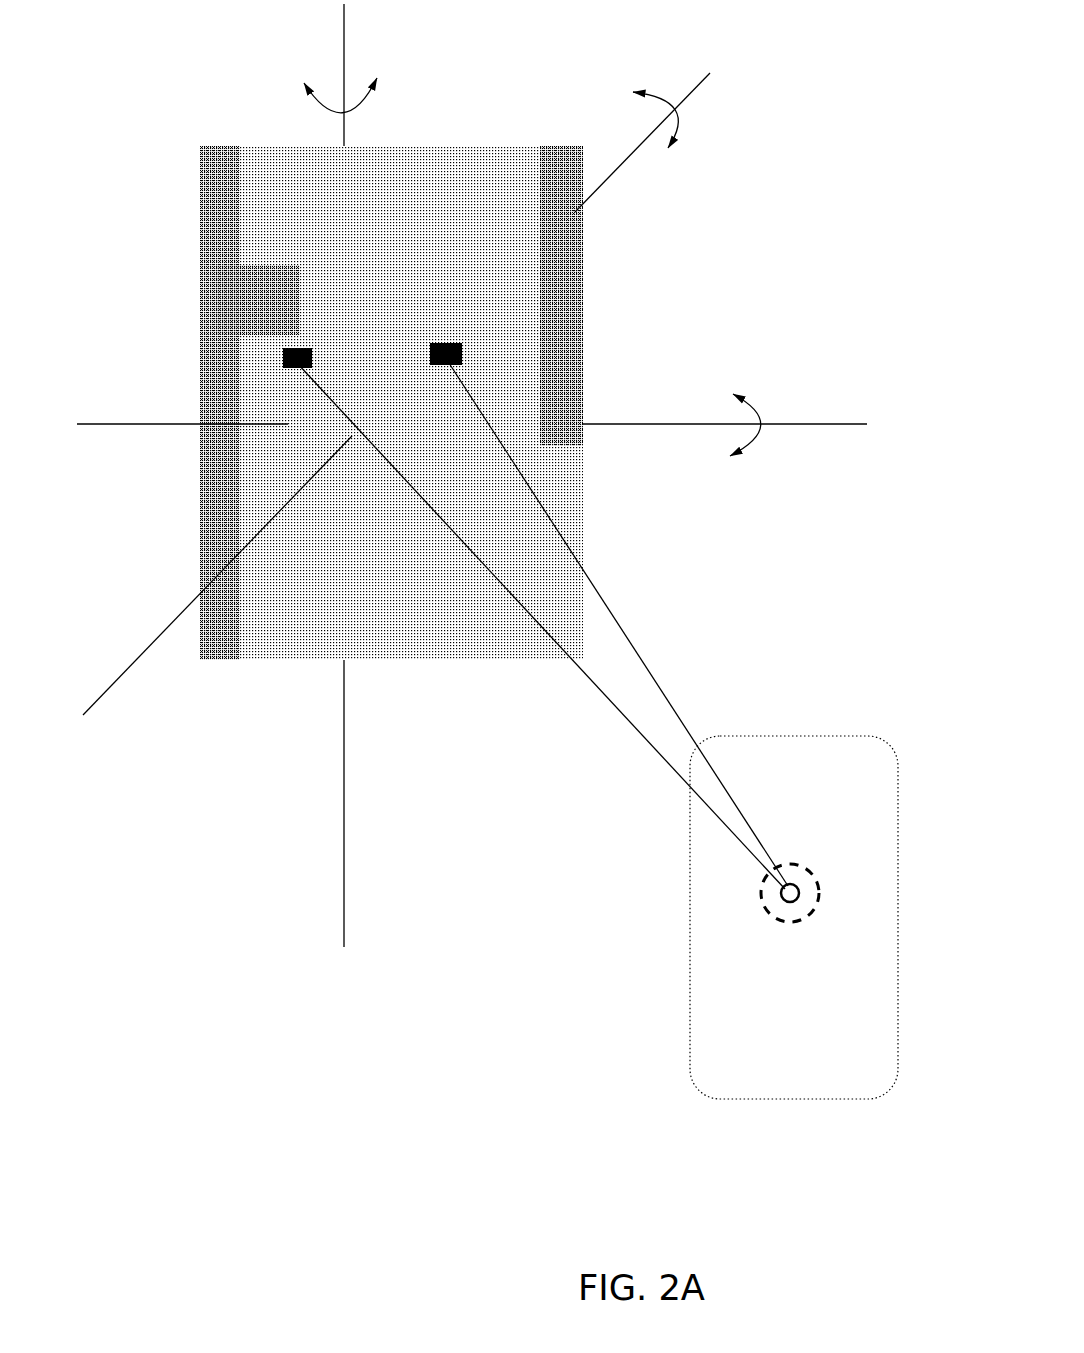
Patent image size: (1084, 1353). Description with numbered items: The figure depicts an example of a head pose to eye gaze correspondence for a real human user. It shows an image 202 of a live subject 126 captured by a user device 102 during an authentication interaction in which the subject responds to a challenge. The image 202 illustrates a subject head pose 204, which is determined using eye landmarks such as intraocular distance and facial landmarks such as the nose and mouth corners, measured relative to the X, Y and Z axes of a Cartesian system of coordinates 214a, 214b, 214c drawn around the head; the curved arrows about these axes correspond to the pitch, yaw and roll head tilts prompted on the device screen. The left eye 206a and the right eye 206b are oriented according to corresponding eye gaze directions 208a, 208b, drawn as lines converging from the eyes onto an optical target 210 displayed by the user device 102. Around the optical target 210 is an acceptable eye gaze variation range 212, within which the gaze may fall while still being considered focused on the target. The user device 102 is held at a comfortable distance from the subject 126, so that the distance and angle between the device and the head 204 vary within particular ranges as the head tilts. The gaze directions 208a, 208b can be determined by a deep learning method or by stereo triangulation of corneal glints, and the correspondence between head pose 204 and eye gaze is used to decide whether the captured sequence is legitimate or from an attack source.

The user device 102 is at (843, 737).
The live subject 126 is at (230, 303).
The image 202 is at (816, 140).
The subject head pose 204 is at (272, 235).
The left eye 206a is at (265, 366).
The right eye 206b is at (463, 354).
The eye gaze direction 208a is at (592, 679).
The eye gaze direction 208b is at (678, 713).
The optical target 210 is at (800, 890).
The acceptable eye gaze variation range 212 is at (812, 912).
The X axis of Cartesian system of coordinates 214a is at (643, 427).
The Y axis of Cartesian system of coordinates 214b is at (347, 907).
The Z axis of Cartesian system of coordinates 214c is at (178, 612).